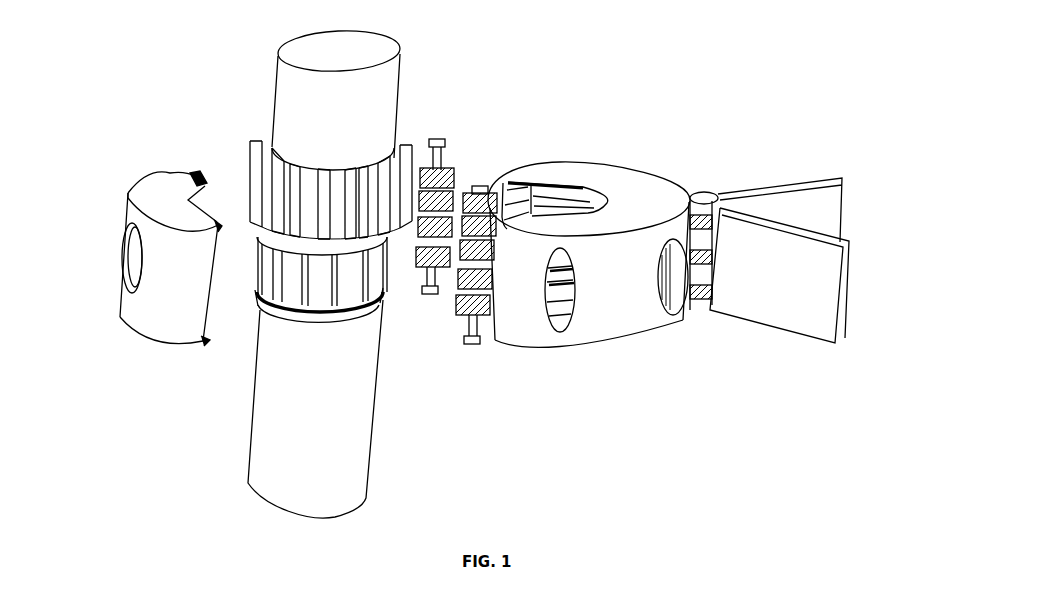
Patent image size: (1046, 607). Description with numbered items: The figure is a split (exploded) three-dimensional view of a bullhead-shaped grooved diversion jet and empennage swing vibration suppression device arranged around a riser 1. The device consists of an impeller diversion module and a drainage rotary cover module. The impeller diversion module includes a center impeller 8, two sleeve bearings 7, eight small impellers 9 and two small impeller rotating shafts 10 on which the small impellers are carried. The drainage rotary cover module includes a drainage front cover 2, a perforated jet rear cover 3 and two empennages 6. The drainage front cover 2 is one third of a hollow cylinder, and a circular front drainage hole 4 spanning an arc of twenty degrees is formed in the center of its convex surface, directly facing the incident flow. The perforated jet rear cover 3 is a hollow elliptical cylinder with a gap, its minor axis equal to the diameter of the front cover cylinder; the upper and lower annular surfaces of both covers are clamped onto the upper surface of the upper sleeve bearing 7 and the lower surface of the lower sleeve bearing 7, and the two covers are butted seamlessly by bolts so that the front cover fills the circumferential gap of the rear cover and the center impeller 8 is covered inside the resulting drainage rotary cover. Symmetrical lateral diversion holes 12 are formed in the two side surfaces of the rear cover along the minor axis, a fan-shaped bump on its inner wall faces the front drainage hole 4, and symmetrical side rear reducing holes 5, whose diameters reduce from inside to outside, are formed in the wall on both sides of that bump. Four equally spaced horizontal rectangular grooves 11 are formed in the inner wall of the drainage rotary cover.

The riser 1 is at (403, 67).
The drainage front cover 2 is at (147, 188).
The perforated jet rear cover 3 is at (640, 187).
The front drainage hole 4 is at (122, 263).
The side rear reducing hole 5 is at (677, 315).
The empennage 6 is at (857, 277).
The sleeve bearing 7 is at (270, 313).
The center impeller 8 is at (257, 157).
The small impeller 9 is at (457, 163).
The small impeller rotating shaft 10 is at (447, 153).
The horizontal rectangular groove 11 is at (590, 183).
The lateral diversion hole 12 is at (547, 180).